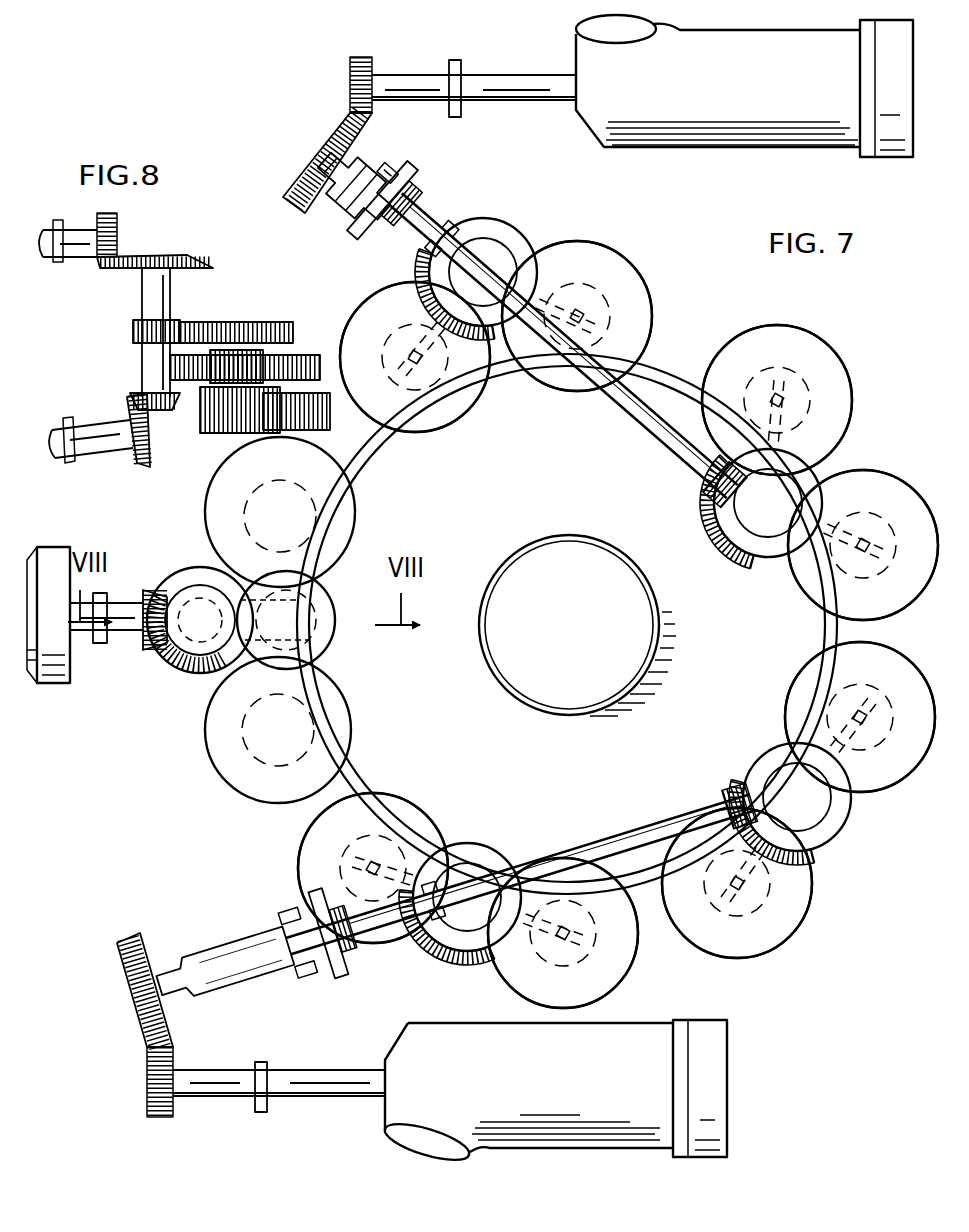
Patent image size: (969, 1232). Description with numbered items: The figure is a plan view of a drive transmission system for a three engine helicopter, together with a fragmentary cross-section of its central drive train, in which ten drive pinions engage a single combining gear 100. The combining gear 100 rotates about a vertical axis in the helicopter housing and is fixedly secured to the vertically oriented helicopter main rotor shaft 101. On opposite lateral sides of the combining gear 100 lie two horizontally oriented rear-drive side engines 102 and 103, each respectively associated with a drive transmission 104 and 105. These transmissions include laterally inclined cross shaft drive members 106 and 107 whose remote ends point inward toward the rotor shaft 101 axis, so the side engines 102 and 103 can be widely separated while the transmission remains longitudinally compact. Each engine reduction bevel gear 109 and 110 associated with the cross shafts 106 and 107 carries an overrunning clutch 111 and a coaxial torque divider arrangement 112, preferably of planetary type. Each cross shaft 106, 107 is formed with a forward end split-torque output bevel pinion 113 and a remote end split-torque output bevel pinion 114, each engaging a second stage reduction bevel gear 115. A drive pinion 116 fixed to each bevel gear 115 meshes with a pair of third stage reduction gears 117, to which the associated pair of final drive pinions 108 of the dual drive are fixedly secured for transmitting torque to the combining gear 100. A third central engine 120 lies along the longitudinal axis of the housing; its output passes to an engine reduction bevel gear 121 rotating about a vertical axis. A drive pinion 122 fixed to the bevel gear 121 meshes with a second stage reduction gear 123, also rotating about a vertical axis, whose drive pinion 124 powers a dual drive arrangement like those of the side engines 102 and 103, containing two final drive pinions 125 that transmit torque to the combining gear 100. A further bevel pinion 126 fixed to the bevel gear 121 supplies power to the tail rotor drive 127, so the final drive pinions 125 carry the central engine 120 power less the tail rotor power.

In FIG. 7, the combining gear 100 is at (533, 788).
In FIG. 8, the combining gear 100 is at (305, 436).
In FIG. 7, the helicopter main rotor shaft 101 is at (664, 614).
In FIG. 7, the helicopter engine 102 is at (523, 1128).
In FIG. 7, the helicopter engine 103 is at (693, 130).
In FIG. 7, the drive transmission 104 is at (207, 938).
In FIG. 7, the drive transmission 105 is at (345, 236).
In FIG. 7, the cross shaft drive member 106 is at (625, 846).
In FIG. 7, the cross shaft drive member 107 is at (648, 368).
In FIG. 7, the final drive pinion 108 is at (361, 303).
In FIG. 7, the engine reduction bevel gear 109 is at (133, 930).
In FIG. 7, the engine reduction bevel gear 110 is at (322, 170).
In FIG. 7, the overrunning clutch 111 is at (392, 170).
In FIG. 7, the coaxial torque divider arrangement 112 is at (425, 190).
In FIG. 7, the forward end split-torque output bevel pinion 113 is at (448, 230).
In FIG. 7, the remote end split-torque output bevel pinion 114 is at (712, 488).
In FIG. 7, the second stage reduction bevel gear 115 is at (497, 232).
In FIG. 7, the drive pinion 116 is at (495, 352).
In FIG. 7, the third stage reduction gear 117 is at (643, 283).
In FIG. 7, the central engine 120 is at (50, 683).
In FIG. 7, the engine reduction bevel gear 121 is at (176, 580).
In FIG. 8, the engine reduction bevel gear 121 is at (180, 253).
In FIG. 7, the drive pinion 122 is at (185, 668).
In FIG. 8, the drive pinion 122 is at (135, 320).
In FIG. 7, the second stage reduction gear 123 is at (333, 615).
In FIG. 8, the second stage reduction gear 123 is at (210, 322).
In FIG. 7, the drive pinion 124 is at (328, 640).
In FIG. 8, the drive pinion 124 is at (213, 352).
In FIG. 7, the final drive pinion 125 is at (352, 500).
In FIG. 8, the final drive pinion 125 is at (220, 426).
In FIG. 8, the bevel pinion 126 is at (150, 393).
In FIG. 8, the tail rotor drive 127 is at (117, 457).